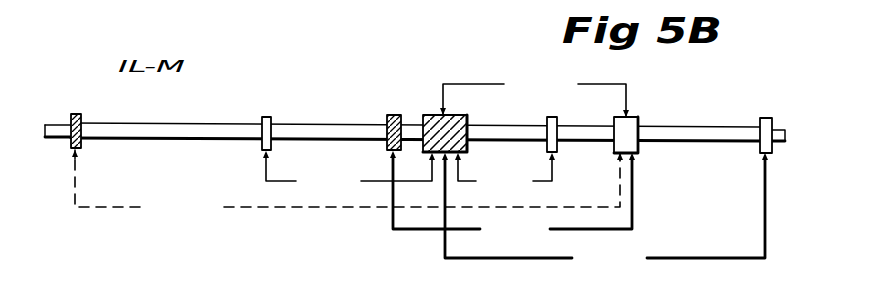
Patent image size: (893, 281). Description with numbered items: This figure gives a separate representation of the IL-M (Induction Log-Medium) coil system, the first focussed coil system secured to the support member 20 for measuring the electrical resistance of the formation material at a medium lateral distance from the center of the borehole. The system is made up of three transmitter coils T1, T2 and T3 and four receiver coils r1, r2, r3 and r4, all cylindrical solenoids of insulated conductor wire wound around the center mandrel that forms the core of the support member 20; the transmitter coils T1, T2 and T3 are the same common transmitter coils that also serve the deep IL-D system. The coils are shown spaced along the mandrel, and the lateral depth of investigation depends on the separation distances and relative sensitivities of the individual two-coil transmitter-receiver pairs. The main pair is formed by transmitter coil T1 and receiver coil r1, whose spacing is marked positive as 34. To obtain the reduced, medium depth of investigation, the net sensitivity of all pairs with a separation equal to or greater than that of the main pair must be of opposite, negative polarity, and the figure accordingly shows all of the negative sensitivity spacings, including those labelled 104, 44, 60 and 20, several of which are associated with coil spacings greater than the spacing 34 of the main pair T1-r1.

The transmitter coil T3 is at (62, 115).
The receiver coil r4 is at (257, 117).
The transmitter coil T2 is at (383, 118).
The transmitter coil T1 is at (460, 126).
The receiver coil r3 is at (558, 126).
The receiver coil r1 is at (645, 129).
The receiver coil r2 is at (784, 127).
The aberration contribution (-104) between T3 and r1 104 is at (347, 183).
The spacing of the main coil pair 34 is at (446, 133).
The support member 20 is at (505, 172).
The aberration contribution (-44) between T2 and r1 44 is at (512, 195).
The aberration contribution (-60) between T1 and r2 60 is at (605, 210).